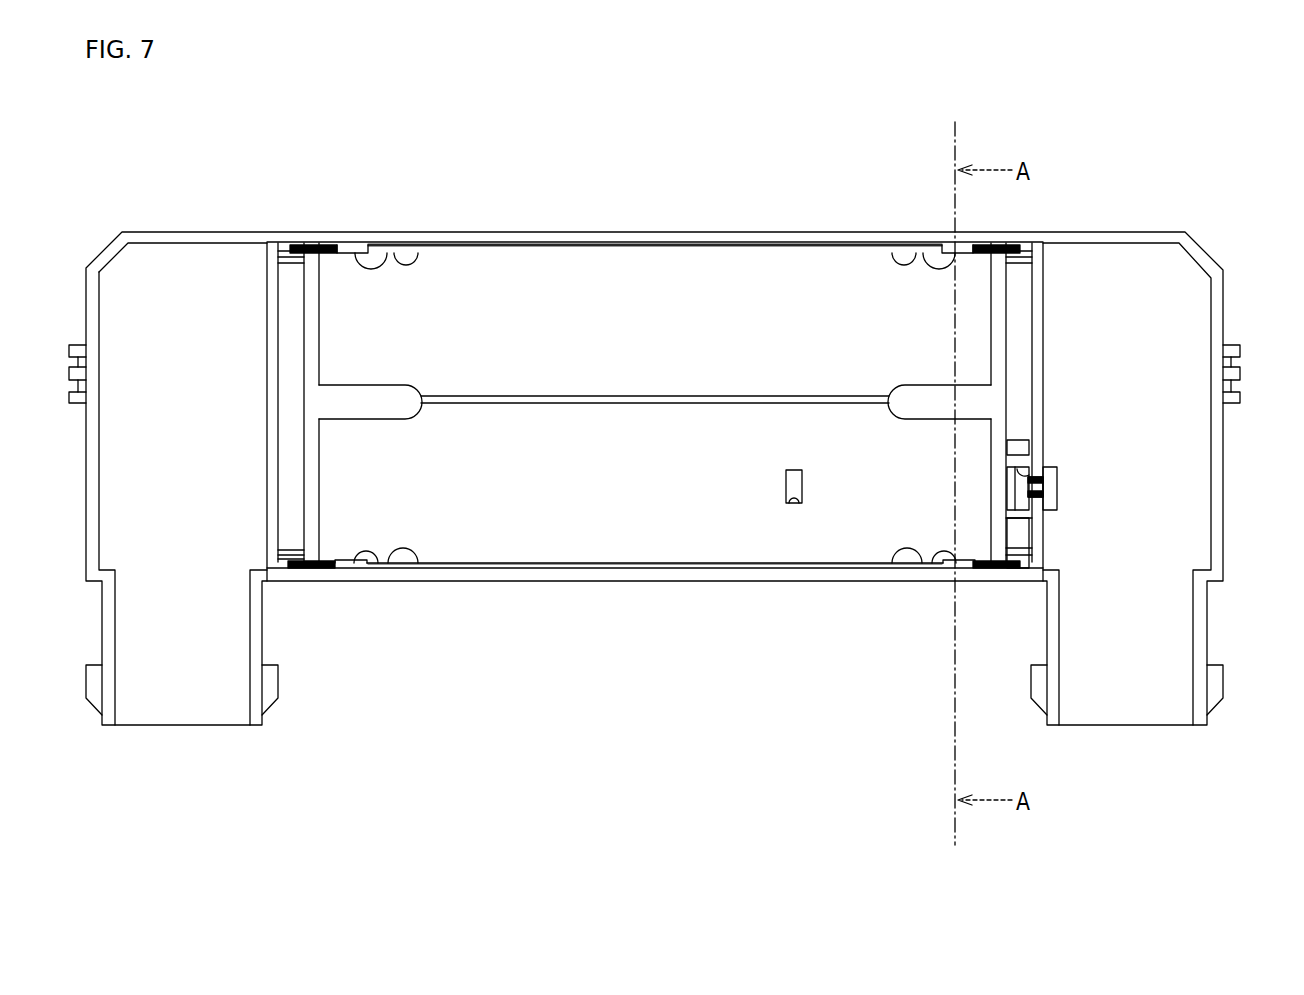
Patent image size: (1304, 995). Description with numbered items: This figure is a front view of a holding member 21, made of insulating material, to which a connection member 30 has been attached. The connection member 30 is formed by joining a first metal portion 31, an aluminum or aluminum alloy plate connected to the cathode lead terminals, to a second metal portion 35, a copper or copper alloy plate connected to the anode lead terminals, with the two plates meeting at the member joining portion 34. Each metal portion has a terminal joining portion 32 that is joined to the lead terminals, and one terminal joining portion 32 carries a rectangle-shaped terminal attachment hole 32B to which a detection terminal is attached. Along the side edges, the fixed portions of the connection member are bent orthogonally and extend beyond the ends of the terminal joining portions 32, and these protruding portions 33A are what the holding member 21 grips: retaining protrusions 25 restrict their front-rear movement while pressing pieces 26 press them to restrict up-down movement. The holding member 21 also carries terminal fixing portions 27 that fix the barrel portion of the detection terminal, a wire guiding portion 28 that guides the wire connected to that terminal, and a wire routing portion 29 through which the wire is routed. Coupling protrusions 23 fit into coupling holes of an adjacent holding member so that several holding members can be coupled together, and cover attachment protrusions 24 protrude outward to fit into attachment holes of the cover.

The holding member 21 is at (1158, 232).
The coupling protrusion 23 is at (86, 672).
The cover attachment protrusion 24 is at (68, 372).
The retaining protrusion 25 is at (375, 262).
The pressing piece 26 is at (290, 263).
The terminal fixing portion 27 is at (1030, 490).
The wire guiding portion 28 is at (1046, 487).
The wire routing portion 29 is at (1047, 557).
The connection member 30 is at (536, 255).
The first metal portion 31 is at (571, 278).
The terminal joining portion 32 is at (611, 280).
The terminal attachment hole 32B is at (790, 505).
The protruding portion 33A is at (306, 245).
The member joining portion 34 is at (670, 395).
The second metal portion 35 is at (632, 546).